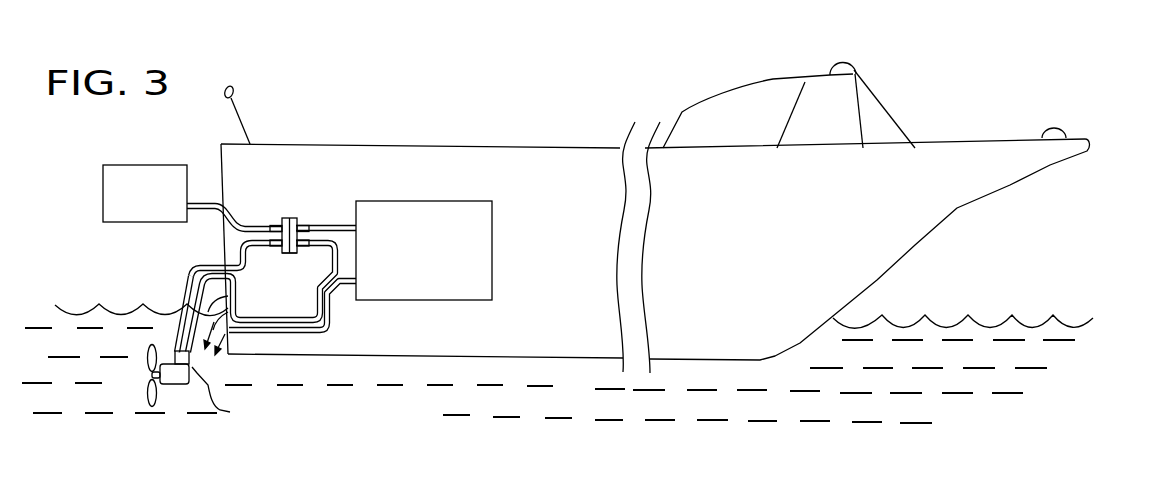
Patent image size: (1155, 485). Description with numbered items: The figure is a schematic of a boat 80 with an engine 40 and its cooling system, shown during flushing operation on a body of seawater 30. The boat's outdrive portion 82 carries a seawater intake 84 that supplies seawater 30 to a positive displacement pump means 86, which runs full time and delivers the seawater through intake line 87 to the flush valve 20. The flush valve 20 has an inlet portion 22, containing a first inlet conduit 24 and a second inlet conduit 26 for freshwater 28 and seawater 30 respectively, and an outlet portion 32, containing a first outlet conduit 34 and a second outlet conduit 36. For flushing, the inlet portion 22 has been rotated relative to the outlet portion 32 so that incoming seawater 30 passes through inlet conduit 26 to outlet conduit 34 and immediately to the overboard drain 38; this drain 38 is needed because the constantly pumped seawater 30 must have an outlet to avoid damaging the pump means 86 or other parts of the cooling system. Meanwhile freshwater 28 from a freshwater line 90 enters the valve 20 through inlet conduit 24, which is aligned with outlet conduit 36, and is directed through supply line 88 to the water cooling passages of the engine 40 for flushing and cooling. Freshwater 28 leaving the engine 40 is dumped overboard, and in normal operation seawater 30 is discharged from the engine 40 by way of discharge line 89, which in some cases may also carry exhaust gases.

The flush valve 20 is at (297, 192).
The inlet portion 22 is at (286, 218).
The first inlet conduit 24 is at (275, 226).
The second inlet conduit 26 is at (277, 246).
The freshwater 28 is at (138, 223).
The seawater 30 is at (787, 413).
The outlet portion 32 is at (300, 218).
The first outlet conduit 34 is at (330, 258).
The second outlet conduit 36 is at (308, 236).
The drain 38 is at (240, 313).
The engine 40 is at (468, 300).
The boat 80 is at (570, 149).
The outdrive portion 82 is at (177, 386).
The seawater intake 84 is at (434, 420).
The pump means 86 is at (170, 334).
The intake line 87 is at (220, 246).
The supply line 88 is at (342, 221).
The discharge line 89 is at (322, 333).
The freshwater line 90 is at (205, 203).